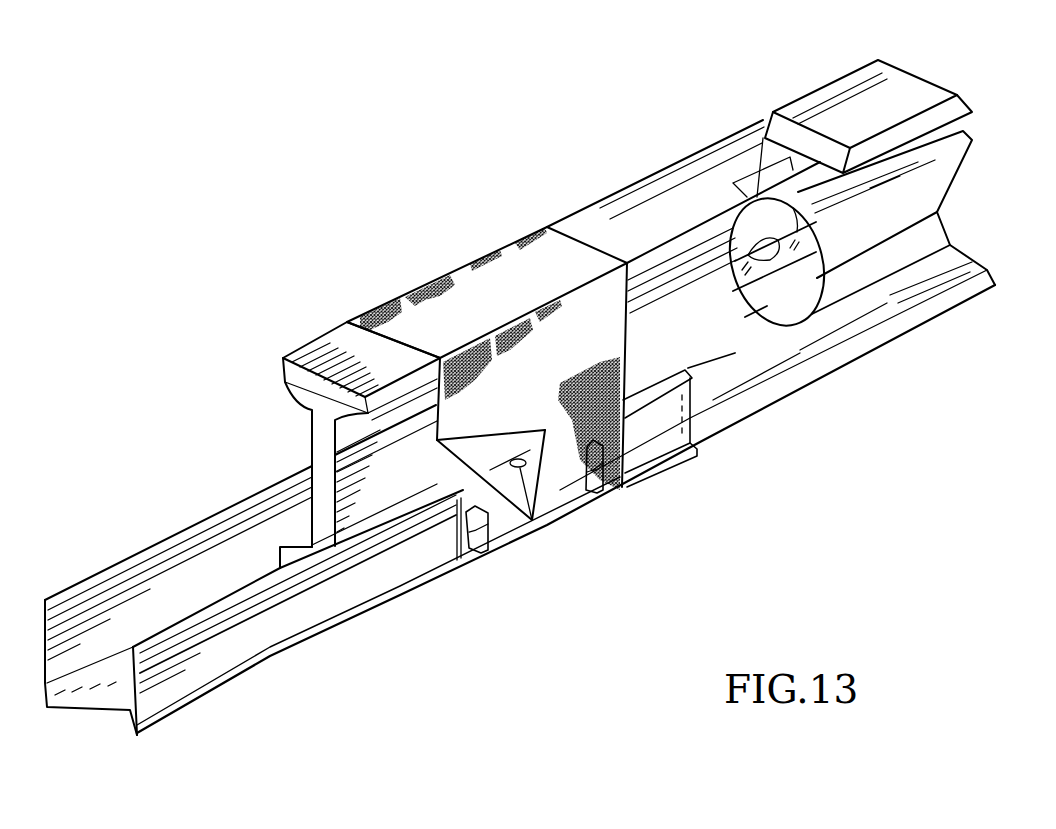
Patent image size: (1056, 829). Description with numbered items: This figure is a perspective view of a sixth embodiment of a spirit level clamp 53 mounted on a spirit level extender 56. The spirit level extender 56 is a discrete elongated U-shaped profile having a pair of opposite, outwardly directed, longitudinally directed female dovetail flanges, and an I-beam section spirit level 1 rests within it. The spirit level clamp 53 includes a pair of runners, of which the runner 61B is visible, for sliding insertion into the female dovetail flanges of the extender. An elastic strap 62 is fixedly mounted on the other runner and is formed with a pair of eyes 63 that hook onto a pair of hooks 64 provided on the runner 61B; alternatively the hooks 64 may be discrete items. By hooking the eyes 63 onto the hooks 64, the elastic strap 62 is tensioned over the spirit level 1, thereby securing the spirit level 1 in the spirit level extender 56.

The spirit level 1 is at (900, 93).
The spirit level clamp 53 is at (462, 250).
The spirit level extender 56 is at (310, 612).
The runner 61B is at (532, 524).
The elastic strap 62 is at (428, 300).
The eyes 63 is at (640, 447).
The hooks 64 is at (604, 475).